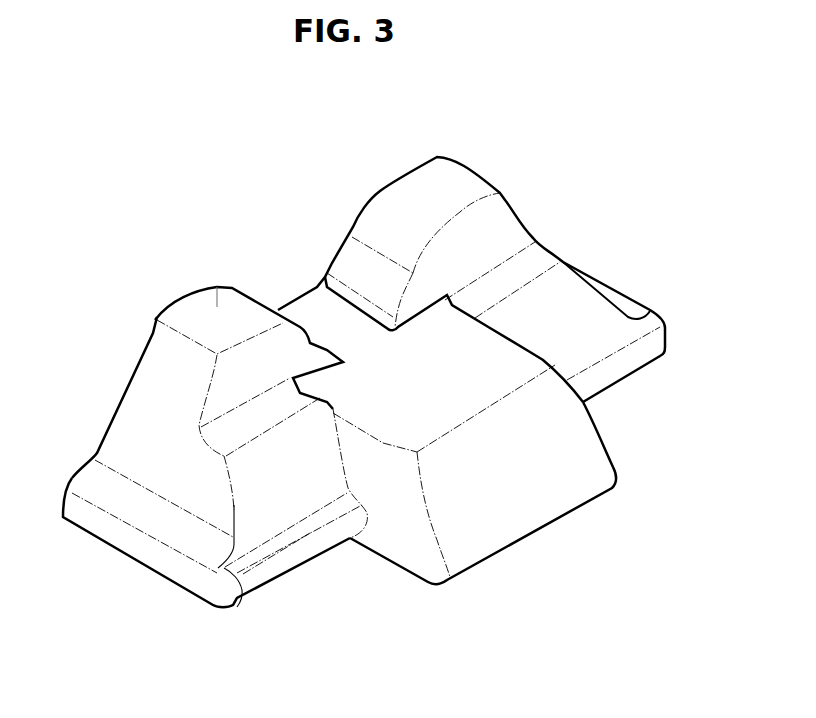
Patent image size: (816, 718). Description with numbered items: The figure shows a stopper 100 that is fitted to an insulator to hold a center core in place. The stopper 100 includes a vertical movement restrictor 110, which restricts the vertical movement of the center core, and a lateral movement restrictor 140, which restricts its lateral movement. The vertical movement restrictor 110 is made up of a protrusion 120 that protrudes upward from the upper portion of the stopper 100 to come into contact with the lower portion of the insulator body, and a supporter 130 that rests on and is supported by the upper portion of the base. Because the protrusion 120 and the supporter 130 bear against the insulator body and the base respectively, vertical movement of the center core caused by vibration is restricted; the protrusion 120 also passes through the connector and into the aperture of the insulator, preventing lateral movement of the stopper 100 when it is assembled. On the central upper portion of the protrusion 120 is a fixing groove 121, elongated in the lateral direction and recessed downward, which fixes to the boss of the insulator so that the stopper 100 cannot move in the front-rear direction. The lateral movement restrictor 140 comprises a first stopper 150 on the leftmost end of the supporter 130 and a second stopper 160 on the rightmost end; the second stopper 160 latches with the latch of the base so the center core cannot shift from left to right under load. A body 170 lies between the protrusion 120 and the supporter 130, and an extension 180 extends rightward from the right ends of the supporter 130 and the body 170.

The stopper 100 is at (355, 97).
The vertical movement restrictor 110 is at (228, 157).
The protrusion 120 is at (380, 213).
The fixing groove 121 is at (332, 344).
The supporter 130 is at (123, 540).
The lateral movement restrictor 140 is at (117, 672).
The first stopper 150 is at (68, 507).
The second stopper 160 is at (248, 580).
The body 170 is at (333, 467).
The extension 180 is at (508, 513).